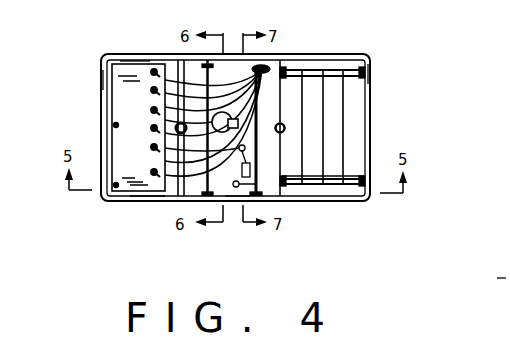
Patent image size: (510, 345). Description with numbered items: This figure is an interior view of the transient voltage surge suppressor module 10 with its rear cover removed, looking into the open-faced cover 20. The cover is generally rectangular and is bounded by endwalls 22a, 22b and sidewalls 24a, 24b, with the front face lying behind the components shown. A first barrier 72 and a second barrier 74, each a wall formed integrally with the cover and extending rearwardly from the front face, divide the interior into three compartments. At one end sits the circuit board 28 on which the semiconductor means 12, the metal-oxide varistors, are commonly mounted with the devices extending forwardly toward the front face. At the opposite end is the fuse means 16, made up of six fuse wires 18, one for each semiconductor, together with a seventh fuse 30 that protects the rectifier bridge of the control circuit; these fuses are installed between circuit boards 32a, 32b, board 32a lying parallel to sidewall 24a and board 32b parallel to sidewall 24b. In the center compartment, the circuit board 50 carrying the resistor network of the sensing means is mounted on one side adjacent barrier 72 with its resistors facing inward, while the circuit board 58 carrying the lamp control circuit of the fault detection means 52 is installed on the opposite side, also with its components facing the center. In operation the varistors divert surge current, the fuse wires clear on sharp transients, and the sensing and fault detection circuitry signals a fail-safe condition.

The transient voltage surge suppressor module 10 is at (418, 196).
The semiconductor means 12 is at (492, 279).
The fuse means 16 is at (405, 90).
The fuse wires 18 is at (323, 129).
The open-faced cover 20 is at (350, 186).
The endwall 22a is at (102, 78).
The endwall 22b is at (370, 72).
The sidewall 24a is at (133, 62).
The sidewall 24b is at (148, 201).
The circuit board 28 is at (130, 153).
The seventh fuse 30 is at (285, 132).
The circuit board 32a is at (332, 70).
The circuit board 32b is at (305, 188).
The circuit board 50 is at (210, 62).
The fault detection means 52 is at (238, 234).
The circuit board 58 is at (266, 68).
The first barrier 72 is at (179, 200).
The second barrier 74 is at (260, 190).